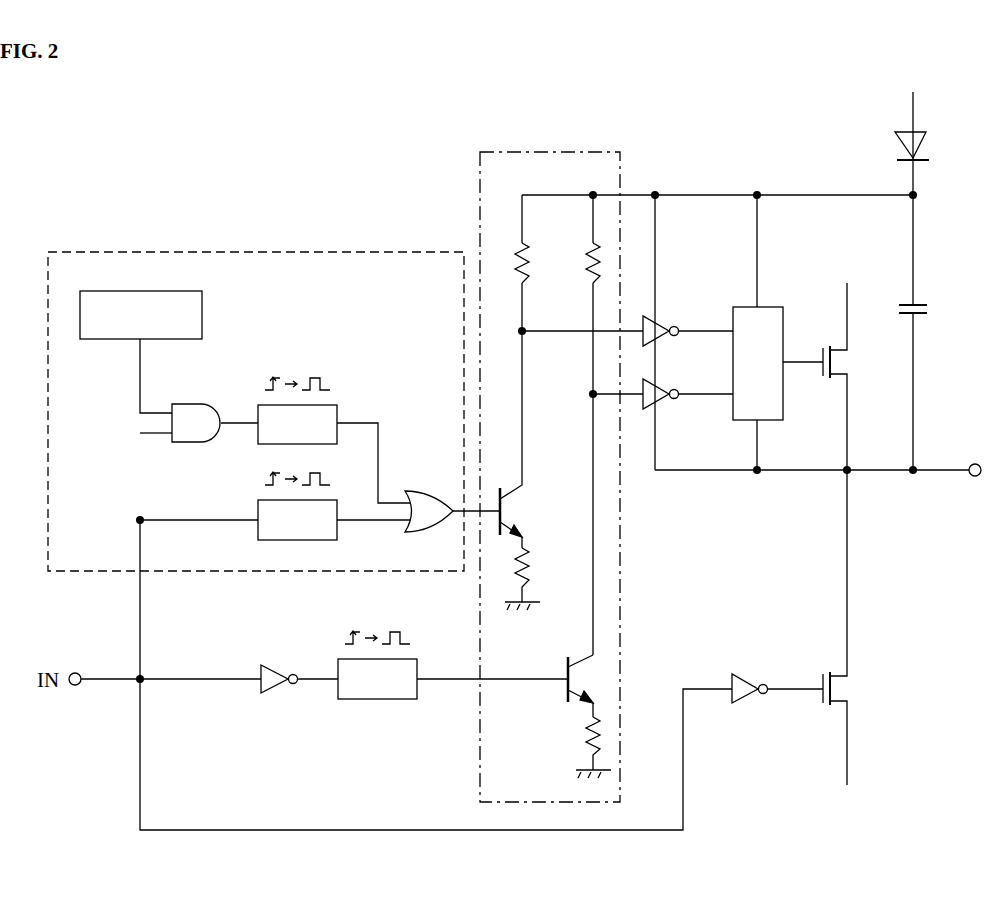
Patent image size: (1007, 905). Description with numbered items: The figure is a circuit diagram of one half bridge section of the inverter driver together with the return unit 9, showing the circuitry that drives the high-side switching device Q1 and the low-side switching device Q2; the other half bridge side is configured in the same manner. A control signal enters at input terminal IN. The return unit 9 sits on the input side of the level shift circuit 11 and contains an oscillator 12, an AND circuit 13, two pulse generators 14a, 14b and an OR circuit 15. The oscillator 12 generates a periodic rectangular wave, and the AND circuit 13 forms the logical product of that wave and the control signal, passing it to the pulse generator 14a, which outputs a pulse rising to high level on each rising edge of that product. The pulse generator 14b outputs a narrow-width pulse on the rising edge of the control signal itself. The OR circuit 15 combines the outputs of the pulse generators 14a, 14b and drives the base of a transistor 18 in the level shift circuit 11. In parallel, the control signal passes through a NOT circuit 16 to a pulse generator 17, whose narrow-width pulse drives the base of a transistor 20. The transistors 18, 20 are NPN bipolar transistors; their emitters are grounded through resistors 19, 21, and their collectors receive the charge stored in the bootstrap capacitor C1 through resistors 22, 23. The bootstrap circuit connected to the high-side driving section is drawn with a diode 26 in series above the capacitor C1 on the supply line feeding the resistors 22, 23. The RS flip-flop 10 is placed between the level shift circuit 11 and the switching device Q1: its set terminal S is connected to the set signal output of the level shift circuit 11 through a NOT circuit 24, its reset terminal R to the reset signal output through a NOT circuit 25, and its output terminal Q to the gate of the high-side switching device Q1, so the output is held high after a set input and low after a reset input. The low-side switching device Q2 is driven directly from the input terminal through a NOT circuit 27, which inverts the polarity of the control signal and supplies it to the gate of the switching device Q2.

The return unit 9 is at (285, 252).
The RS flip-flop 10 is at (770, 307).
The level shift circuit 11 is at (580, 152).
The oscillator 12 is at (203, 316).
The AND circuit 13 is at (206, 404).
The pulse generator 14a is at (325, 405).
The pulse generator 14b is at (258, 504).
The OR circuit 15 is at (431, 491).
The NOT circuit 16 is at (278, 694).
The pulse generator 17 is at (383, 700).
The transistor 18 is at (514, 512).
The resistor 19 is at (534, 565).
The transistor 20 is at (564, 690).
The resistor 21 is at (588, 740).
The resistor 22 is at (533, 266).
The resistor 23 is at (585, 272).
The NOT circuit 24 is at (665, 318).
The NOT circuit 25 is at (664, 406).
The diode 26 is at (928, 145).
The NOT circuit 27 is at (746, 674).
The switching device Q1 is at (845, 364).
The switching device Q2 is at (845, 691).
The capacitor C1 is at (930, 311).